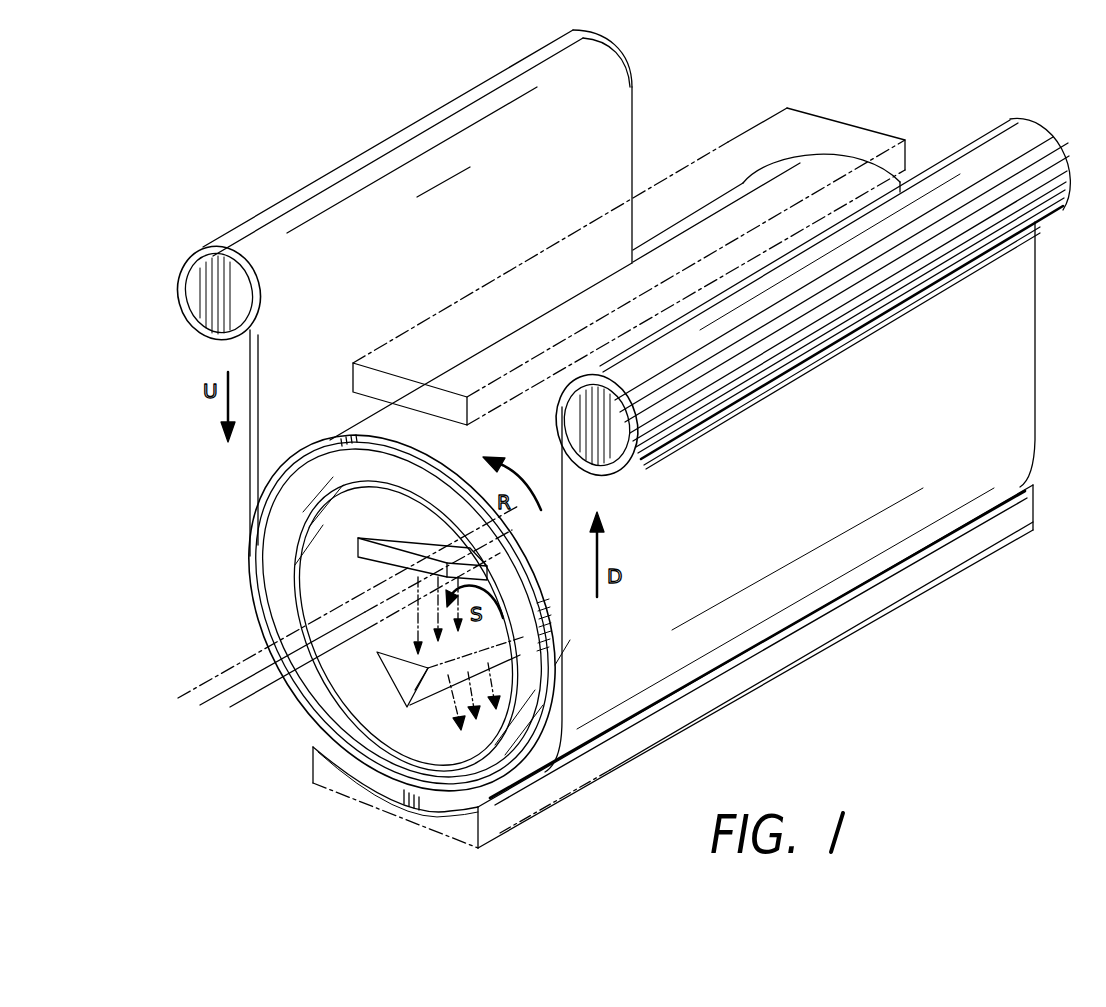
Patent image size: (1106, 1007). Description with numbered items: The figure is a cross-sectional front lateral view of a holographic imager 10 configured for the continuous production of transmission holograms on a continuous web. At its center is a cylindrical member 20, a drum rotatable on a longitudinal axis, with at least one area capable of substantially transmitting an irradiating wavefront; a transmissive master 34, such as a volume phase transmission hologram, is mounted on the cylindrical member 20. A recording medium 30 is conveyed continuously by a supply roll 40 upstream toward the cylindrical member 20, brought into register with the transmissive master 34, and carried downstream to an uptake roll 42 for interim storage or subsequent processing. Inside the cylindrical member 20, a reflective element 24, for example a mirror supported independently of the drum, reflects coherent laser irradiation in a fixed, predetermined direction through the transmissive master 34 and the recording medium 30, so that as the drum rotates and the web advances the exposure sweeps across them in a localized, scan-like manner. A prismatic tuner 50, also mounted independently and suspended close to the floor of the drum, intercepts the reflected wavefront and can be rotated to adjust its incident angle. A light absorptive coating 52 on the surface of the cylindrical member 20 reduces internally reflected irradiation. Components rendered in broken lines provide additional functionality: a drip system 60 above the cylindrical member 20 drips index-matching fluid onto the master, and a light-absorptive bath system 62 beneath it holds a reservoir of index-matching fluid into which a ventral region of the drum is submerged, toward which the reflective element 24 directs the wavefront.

The holographic imager 10 is at (962, 703).
The cylindrical member 20 is at (322, 472).
The reflective element 24 is at (400, 558).
The recording medium 30 is at (250, 520).
The transmissive master 34 is at (258, 553).
The supply roll 40 is at (193, 292).
The uptake roll 42 is at (605, 412).
The prismatic tuner 50 is at (400, 637).
The light absorptive coating 52 is at (340, 707).
The drip system 60 is at (728, 140).
The bath system 62 is at (860, 628).